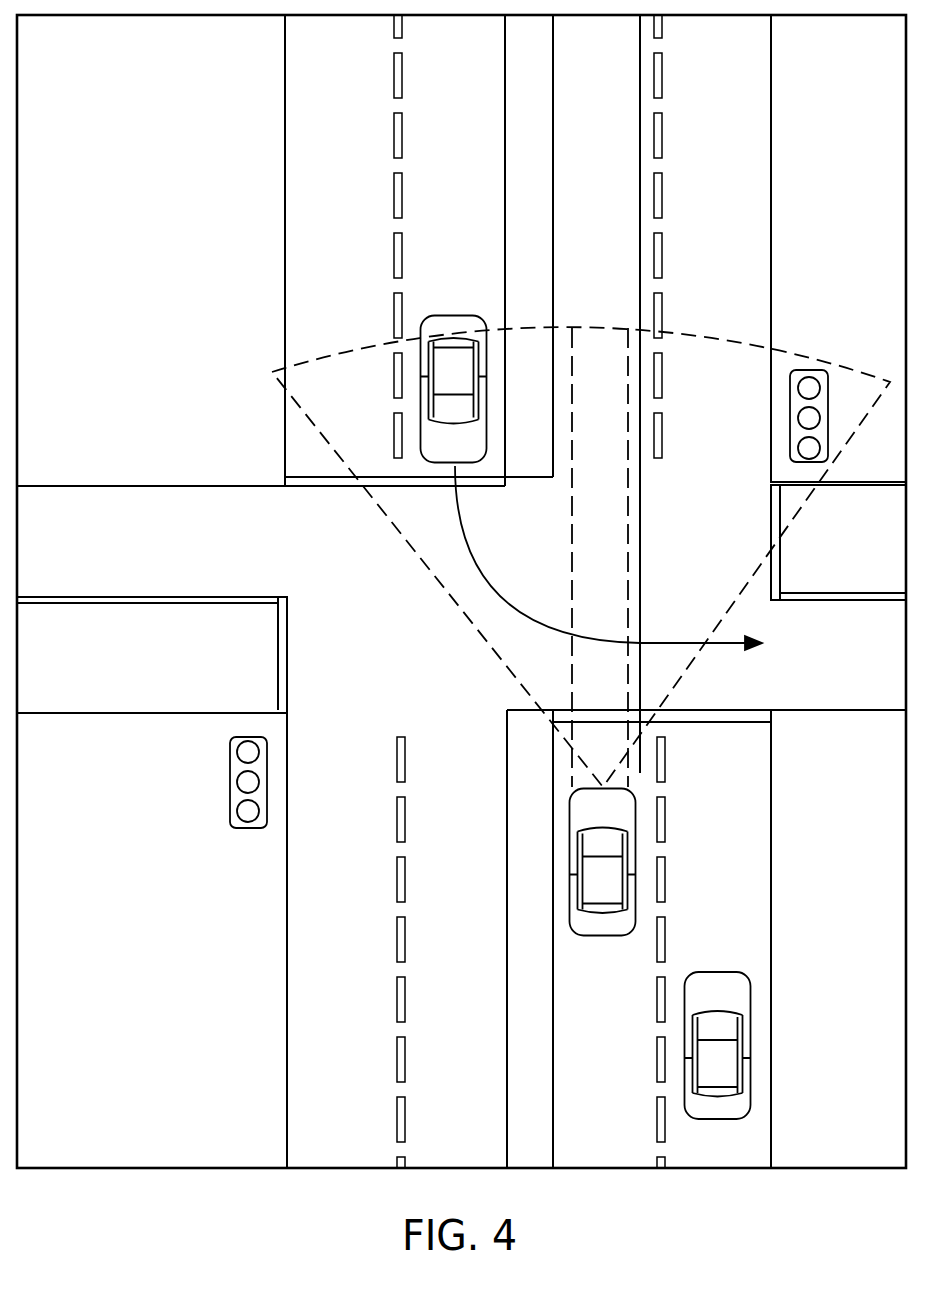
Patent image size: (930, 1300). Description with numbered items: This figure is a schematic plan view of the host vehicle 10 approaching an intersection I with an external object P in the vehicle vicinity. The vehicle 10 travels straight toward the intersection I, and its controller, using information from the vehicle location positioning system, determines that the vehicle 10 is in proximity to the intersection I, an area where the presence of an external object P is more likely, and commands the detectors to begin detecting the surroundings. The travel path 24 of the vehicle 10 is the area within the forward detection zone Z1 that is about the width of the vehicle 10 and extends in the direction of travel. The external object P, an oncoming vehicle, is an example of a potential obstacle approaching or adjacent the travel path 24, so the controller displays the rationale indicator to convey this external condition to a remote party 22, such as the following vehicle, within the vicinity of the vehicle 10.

The vehicle 10 is at (590, 891).
The remote party 22 is at (705, 1075).
The travel path 24 is at (630, 531).
The external object P is at (445, 381).
The detection zone Z1 is at (722, 338).
The intersection I is at (793, 661).